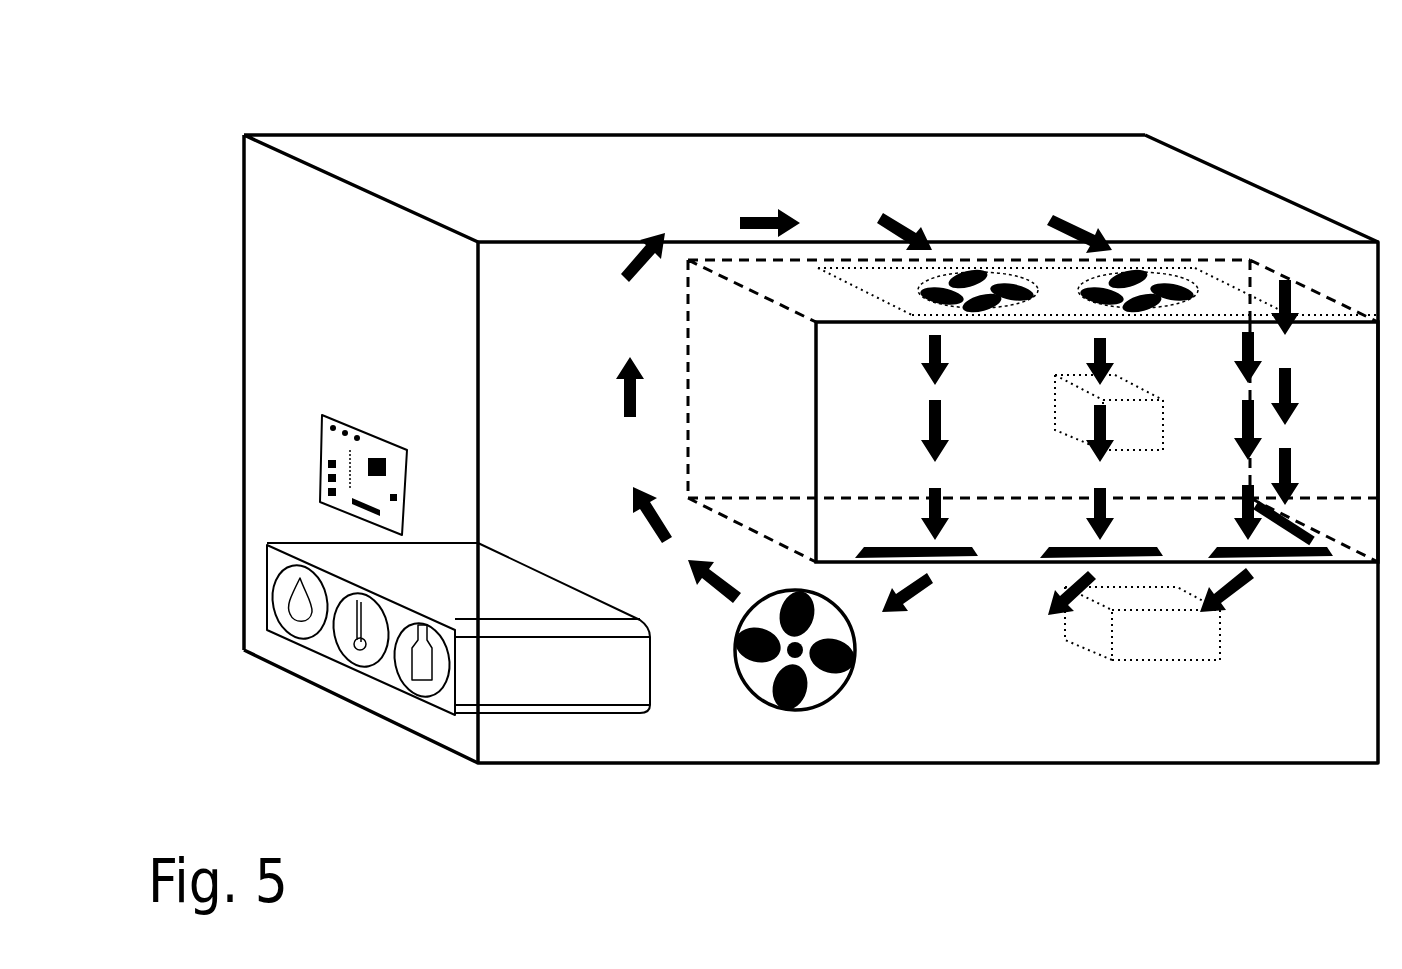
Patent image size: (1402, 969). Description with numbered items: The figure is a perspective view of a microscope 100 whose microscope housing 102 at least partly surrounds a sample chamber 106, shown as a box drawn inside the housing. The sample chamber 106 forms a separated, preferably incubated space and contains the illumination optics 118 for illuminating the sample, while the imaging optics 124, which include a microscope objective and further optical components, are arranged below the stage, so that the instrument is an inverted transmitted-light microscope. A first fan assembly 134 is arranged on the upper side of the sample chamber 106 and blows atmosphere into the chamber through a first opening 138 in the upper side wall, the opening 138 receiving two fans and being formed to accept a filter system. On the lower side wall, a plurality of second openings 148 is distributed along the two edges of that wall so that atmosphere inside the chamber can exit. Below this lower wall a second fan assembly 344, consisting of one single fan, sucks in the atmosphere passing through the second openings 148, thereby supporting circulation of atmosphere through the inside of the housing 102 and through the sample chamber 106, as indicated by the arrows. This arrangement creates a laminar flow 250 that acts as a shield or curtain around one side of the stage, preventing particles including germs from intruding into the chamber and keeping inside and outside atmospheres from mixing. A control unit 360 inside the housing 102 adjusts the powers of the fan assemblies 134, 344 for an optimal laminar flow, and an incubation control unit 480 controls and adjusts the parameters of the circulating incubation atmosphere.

The microscope 100 is at (733, 397).
The microscope housing 102 is at (876, 134).
The sample chamber 106 is at (1033, 373).
The illumination optics 118 is at (1055, 392).
The imaging optics 124 is at (1100, 656).
The first fan assembly 134 is at (968, 283).
The first opening 138 is at (1040, 270).
The second openings 148 is at (1310, 536).
The laminar flow 250 is at (930, 420).
The second fan assembly 344 is at (850, 696).
The control unit 360 is at (362, 417).
The incubation control unit 480 is at (266, 568).